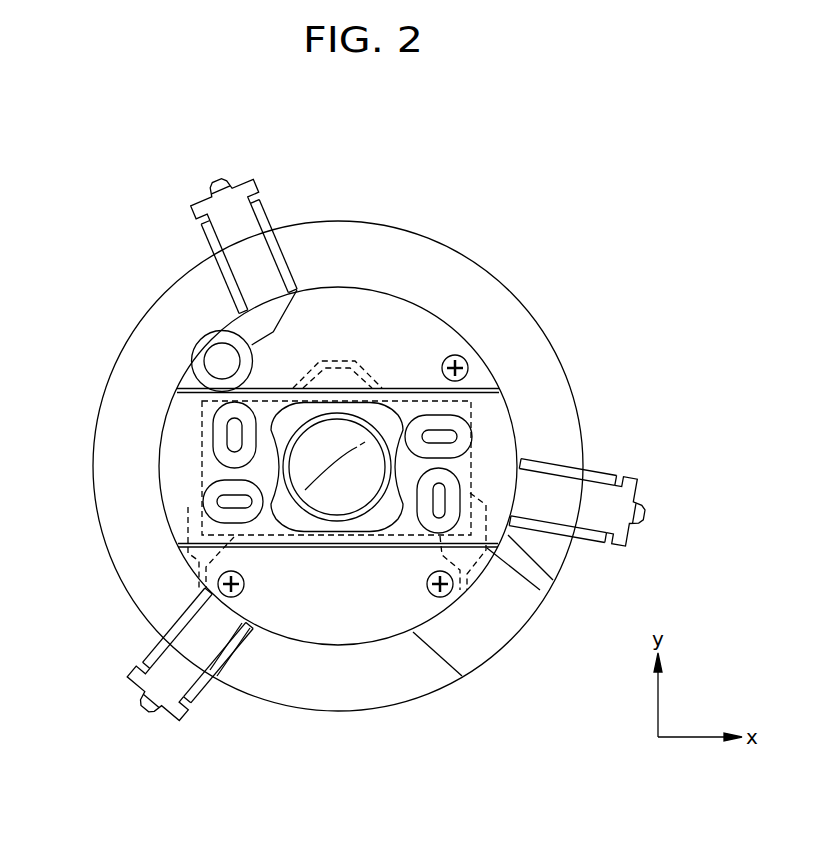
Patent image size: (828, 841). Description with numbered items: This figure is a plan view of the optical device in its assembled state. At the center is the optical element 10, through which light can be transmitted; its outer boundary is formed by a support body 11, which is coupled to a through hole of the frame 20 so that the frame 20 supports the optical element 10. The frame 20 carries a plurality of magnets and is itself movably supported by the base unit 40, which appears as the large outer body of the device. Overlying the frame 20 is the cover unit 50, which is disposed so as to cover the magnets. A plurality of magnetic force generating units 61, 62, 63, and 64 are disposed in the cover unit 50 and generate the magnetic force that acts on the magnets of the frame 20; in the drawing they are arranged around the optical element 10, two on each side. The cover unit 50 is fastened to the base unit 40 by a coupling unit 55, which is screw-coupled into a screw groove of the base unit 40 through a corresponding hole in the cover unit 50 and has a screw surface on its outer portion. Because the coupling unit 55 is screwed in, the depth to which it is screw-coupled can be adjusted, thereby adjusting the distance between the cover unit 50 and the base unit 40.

The optical element 10 is at (333, 497).
The support body 11 is at (352, 520).
The frame 20 is at (286, 547).
The base unit 40 is at (457, 250).
The cover unit 50 is at (516, 433).
The coupling unit 55 is at (444, 590).
The magnetic force generating unit 61 is at (226, 426).
The magnetic force generating unit 62 is at (452, 514).
The magnetic force generating unit 63 is at (218, 492).
The magnetic force generating unit 64 is at (465, 427).